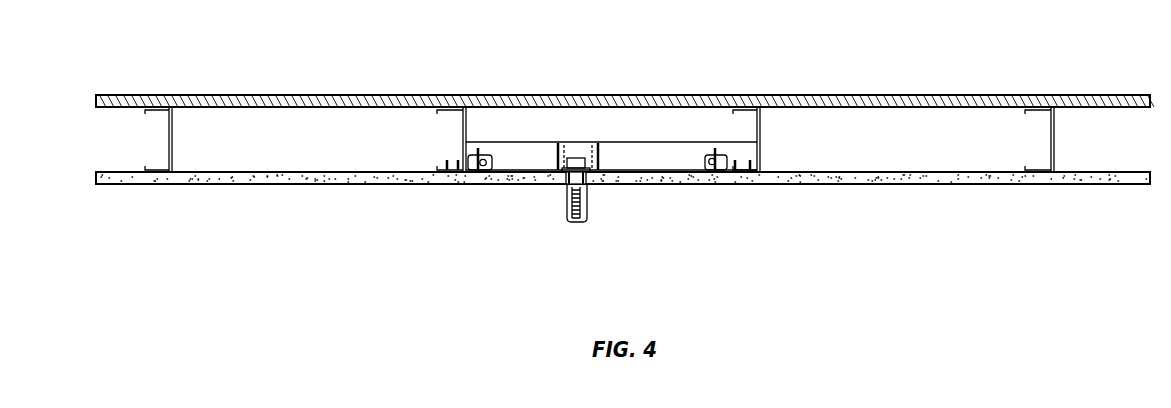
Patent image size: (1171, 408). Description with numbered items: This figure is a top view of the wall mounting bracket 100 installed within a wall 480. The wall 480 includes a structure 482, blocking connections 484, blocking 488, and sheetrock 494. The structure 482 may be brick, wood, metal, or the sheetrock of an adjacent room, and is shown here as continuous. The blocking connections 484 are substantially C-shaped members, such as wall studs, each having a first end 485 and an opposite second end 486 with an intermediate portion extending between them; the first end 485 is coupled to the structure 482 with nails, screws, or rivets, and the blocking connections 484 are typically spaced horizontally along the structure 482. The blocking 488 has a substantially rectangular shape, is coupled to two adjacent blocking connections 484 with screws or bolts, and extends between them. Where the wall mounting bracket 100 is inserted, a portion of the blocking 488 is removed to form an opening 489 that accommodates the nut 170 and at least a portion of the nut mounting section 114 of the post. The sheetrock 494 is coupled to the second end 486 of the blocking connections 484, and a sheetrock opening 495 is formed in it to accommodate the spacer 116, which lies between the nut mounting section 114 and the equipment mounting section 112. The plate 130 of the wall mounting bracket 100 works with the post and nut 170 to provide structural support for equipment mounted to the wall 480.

The wall 480 is at (256, 79).
The structure 482 is at (370, 95).
The first end 485 is at (452, 106).
The opening 489 is at (572, 150).
The nut mounting section 114 is at (580, 156).
The blocking 488 is at (684, 150).
The blocking connection 484 is at (462, 128).
The nut 170 is at (600, 168).
The second end 486 is at (453, 172).
The plate 130 is at (568, 179).
The sheetrock opening 495 is at (589, 176).
The spacer 116 is at (585, 180).
The wall mounting bracket 100 is at (551, 229).
The equipment mounting section 112 is at (588, 214).
The sheetrock 494 is at (836, 184).